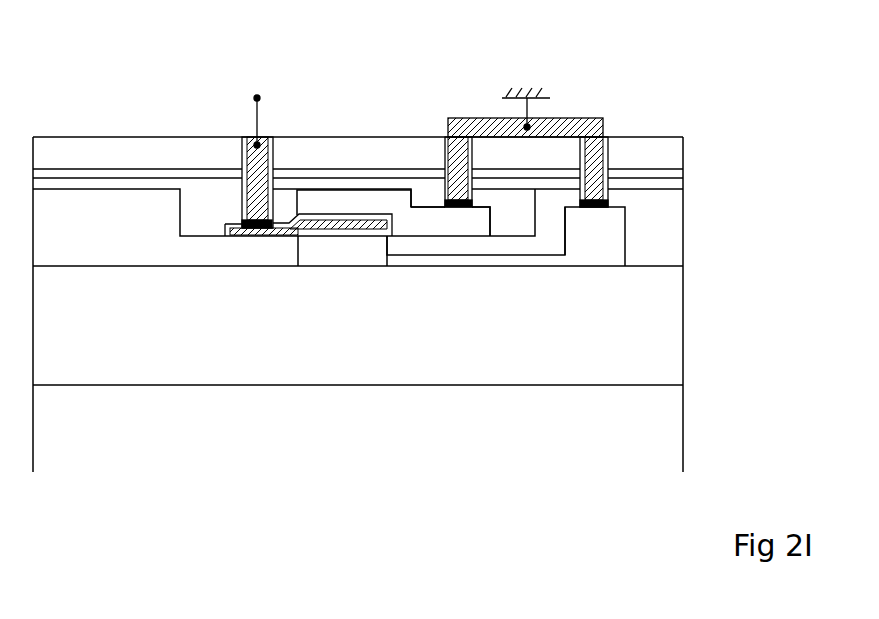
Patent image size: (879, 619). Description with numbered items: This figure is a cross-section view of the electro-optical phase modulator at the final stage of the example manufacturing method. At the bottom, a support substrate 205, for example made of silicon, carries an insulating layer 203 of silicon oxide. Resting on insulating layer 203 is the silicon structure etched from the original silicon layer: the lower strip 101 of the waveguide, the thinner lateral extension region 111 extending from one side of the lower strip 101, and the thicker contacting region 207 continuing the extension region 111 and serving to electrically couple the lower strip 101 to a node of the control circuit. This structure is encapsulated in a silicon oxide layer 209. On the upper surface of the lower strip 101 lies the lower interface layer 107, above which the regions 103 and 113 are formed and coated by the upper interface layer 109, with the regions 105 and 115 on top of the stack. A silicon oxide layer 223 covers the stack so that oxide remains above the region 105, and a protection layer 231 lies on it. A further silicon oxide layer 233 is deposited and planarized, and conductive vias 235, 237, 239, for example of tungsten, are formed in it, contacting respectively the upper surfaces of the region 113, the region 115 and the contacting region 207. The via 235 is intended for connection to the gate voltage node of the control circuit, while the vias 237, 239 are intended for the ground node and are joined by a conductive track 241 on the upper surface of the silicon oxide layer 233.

The lower strip 101 is at (320, 262).
The region 103 is at (316, 222).
The region 105 is at (332, 196).
The lower interface layer 107 is at (364, 235).
The upper interface layer 109 is at (368, 213).
The lateral extension region 111 is at (513, 262).
The region 113 is at (247, 232).
The region 115 is at (420, 223).
The insulating layer 203 is at (665, 330).
The support substrate 205 is at (665, 428).
The contacting region 207 is at (598, 253).
The silicon oxide layer 209 is at (665, 238).
The silicon oxide layer 223 is at (672, 183).
The protection layer 231 is at (672, 172).
The silicon oxide layer 233 is at (672, 150).
The conductive via 235 is at (250, 160).
The conductive via 237 is at (458, 145).
The conductive via 239 is at (596, 158).
The conductive track 241 is at (575, 120).